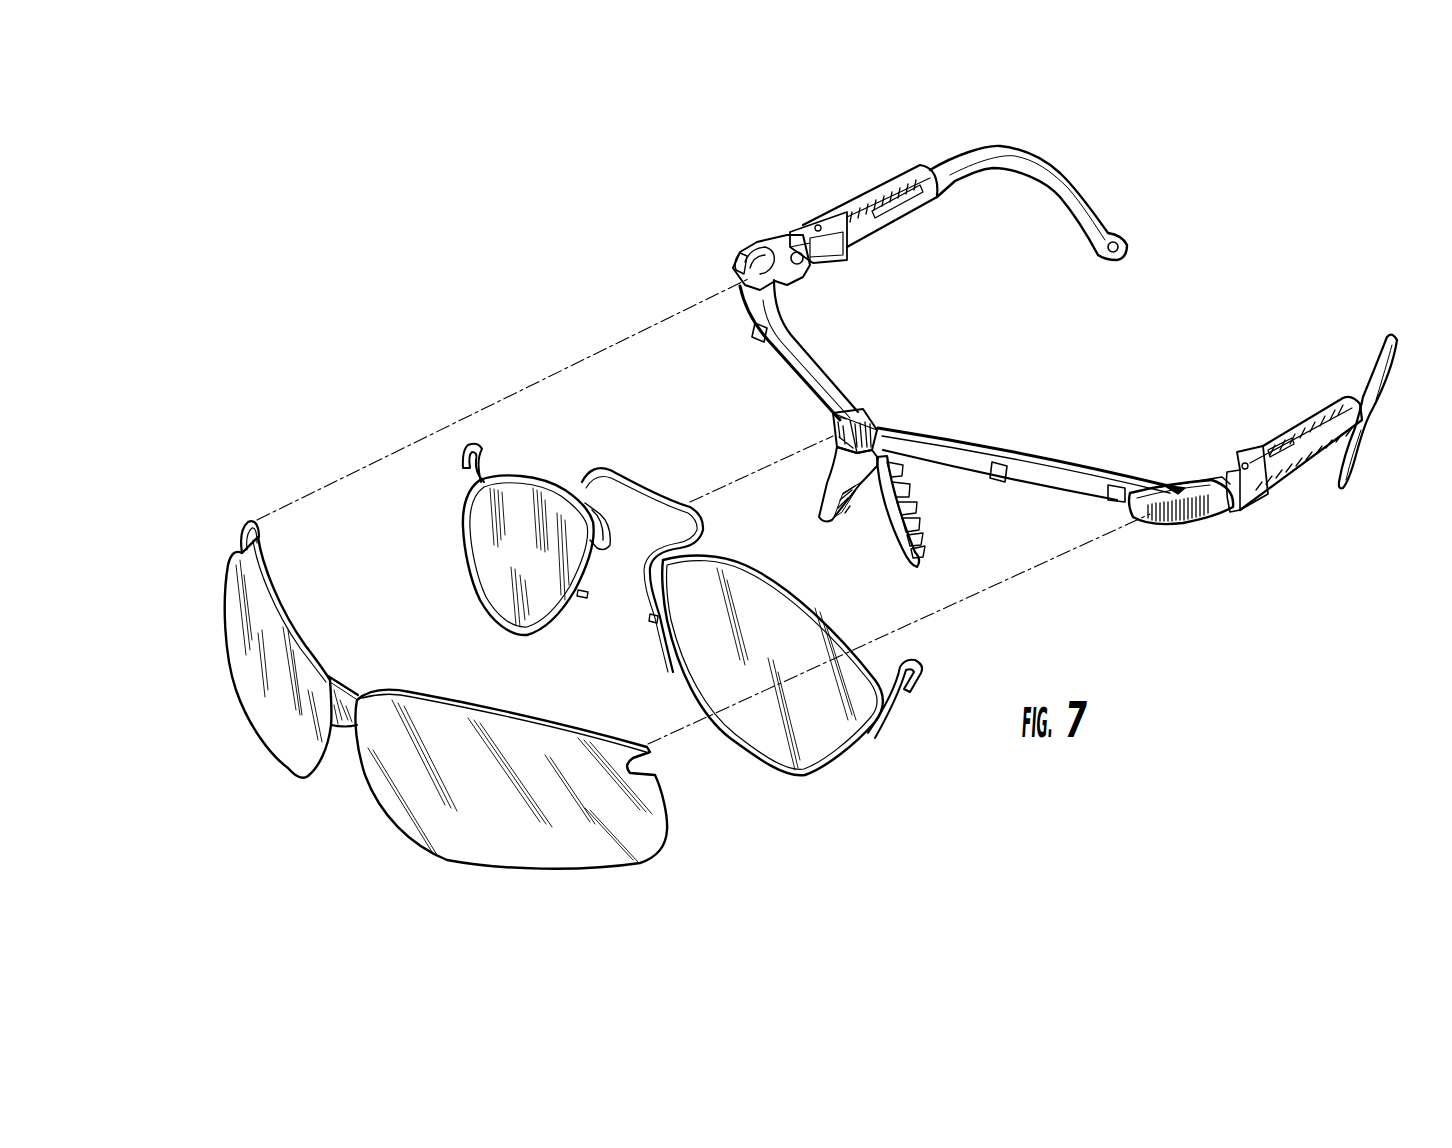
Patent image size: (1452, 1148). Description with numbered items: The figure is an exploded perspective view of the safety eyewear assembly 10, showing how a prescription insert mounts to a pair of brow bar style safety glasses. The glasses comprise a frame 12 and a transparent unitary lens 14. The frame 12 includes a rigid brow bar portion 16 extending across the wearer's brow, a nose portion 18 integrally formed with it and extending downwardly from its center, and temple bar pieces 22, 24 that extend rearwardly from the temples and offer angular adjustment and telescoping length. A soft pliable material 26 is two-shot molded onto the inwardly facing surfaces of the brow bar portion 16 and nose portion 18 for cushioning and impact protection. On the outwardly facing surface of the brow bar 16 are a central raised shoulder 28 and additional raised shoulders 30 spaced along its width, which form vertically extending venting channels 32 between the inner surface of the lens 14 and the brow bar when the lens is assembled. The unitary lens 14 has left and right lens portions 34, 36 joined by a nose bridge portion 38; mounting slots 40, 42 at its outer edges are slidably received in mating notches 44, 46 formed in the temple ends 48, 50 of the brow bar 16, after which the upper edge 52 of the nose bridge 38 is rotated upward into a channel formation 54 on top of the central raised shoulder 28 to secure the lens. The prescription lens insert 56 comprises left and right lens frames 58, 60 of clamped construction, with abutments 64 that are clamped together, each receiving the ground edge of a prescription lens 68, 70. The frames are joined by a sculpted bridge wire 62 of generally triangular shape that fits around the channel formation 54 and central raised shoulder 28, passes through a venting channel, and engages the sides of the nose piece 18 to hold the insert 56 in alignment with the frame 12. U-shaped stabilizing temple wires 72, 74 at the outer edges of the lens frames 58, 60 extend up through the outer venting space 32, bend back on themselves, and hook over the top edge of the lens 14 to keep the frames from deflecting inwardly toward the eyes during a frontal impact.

The safety eyewear assembly 10 is at (1004, 124).
The frame 12 is at (1133, 462).
The transparent unitary lens 14 is at (622, 868).
The brow bar portion 16 is at (969, 424).
The nose portion 18 is at (828, 478).
The temple bar piece 22 is at (904, 182).
The temple bar piece 24 is at (1317, 420).
The soft pliable material 26 is at (782, 281).
The central raised shoulder 28 is at (885, 436).
The raised shoulders 30 is at (750, 283).
The venting channels 32 is at (760, 312).
The left lens portion 34 is at (262, 703).
The right lens portion 36 is at (483, 848).
The nose bridge portion 38 is at (340, 740).
The mounting slot 40 is at (262, 541).
The mounting slot 42 is at (656, 775).
The notch 44 is at (759, 246).
The notch 46 is at (1167, 490).
The temple end 48 is at (779, 238).
The temple end 50 is at (1212, 518).
The upper edge of the nose bridge 52 is at (332, 678).
The channel formation 54 is at (852, 408).
The prescription lens insert 56 is at (878, 746).
The left lens frame 58 is at (535, 478).
The right lens frame 60 is at (812, 602).
The sculpted bridge wire 62 is at (650, 492).
The abutments 64 is at (652, 620).
The prescription lens 68 is at (487, 585).
The prescription lens 70 is at (809, 735).
The stabilizing temple wire 72 is at (481, 456).
The stabilizing temple wire 74 is at (908, 658).